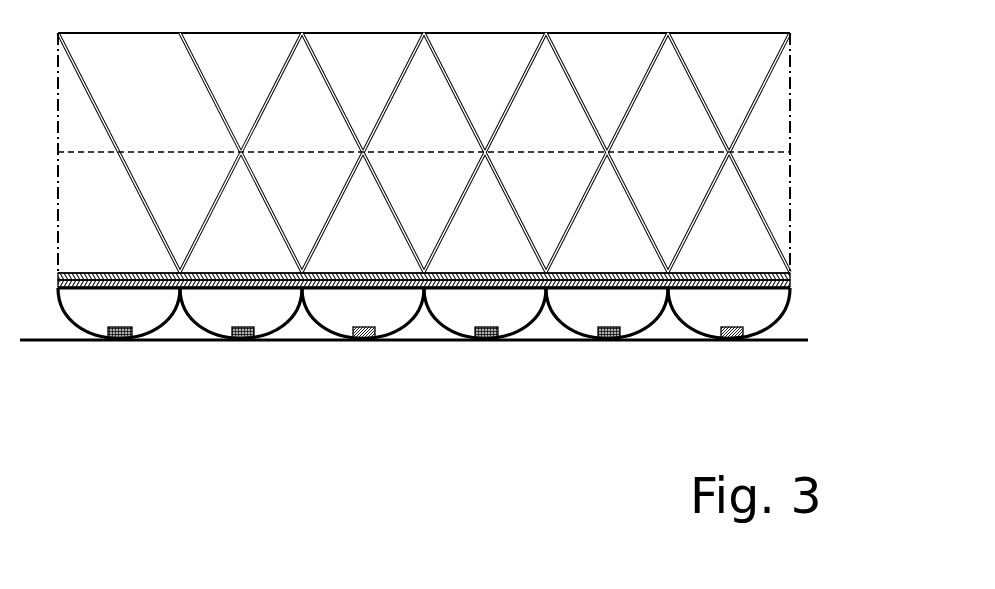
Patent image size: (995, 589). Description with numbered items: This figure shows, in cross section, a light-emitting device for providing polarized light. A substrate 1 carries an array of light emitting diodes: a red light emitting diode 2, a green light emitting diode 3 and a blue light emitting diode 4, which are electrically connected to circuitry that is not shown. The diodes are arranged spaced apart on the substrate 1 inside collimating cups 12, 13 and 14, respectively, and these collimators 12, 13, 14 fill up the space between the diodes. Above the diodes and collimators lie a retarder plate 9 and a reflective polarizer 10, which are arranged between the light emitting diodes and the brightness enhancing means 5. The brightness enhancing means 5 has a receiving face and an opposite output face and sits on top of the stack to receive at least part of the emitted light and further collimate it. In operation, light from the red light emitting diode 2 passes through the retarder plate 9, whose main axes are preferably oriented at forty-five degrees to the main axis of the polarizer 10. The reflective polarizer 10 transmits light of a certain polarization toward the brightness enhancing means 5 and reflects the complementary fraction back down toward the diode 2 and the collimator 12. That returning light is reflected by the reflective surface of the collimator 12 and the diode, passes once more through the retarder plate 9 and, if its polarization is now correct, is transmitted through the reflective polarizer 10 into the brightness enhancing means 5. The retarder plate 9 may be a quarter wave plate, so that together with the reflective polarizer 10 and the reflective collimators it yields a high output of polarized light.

The substrate 1 is at (798, 340).
The red light emitting diode 2 is at (122, 340).
The green light emitting diode 3 is at (243, 340).
The blue light emitting diode 4 is at (365, 340).
The brightness enhancing means 5 is at (831, 34).
The retarder plate 9 is at (790, 290).
The reflective polarizer 10 is at (790, 273).
The collimating cup 12 is at (457, 315).
The collimating cup 13 is at (580, 315).
The collimating cup 14 is at (340, 312).